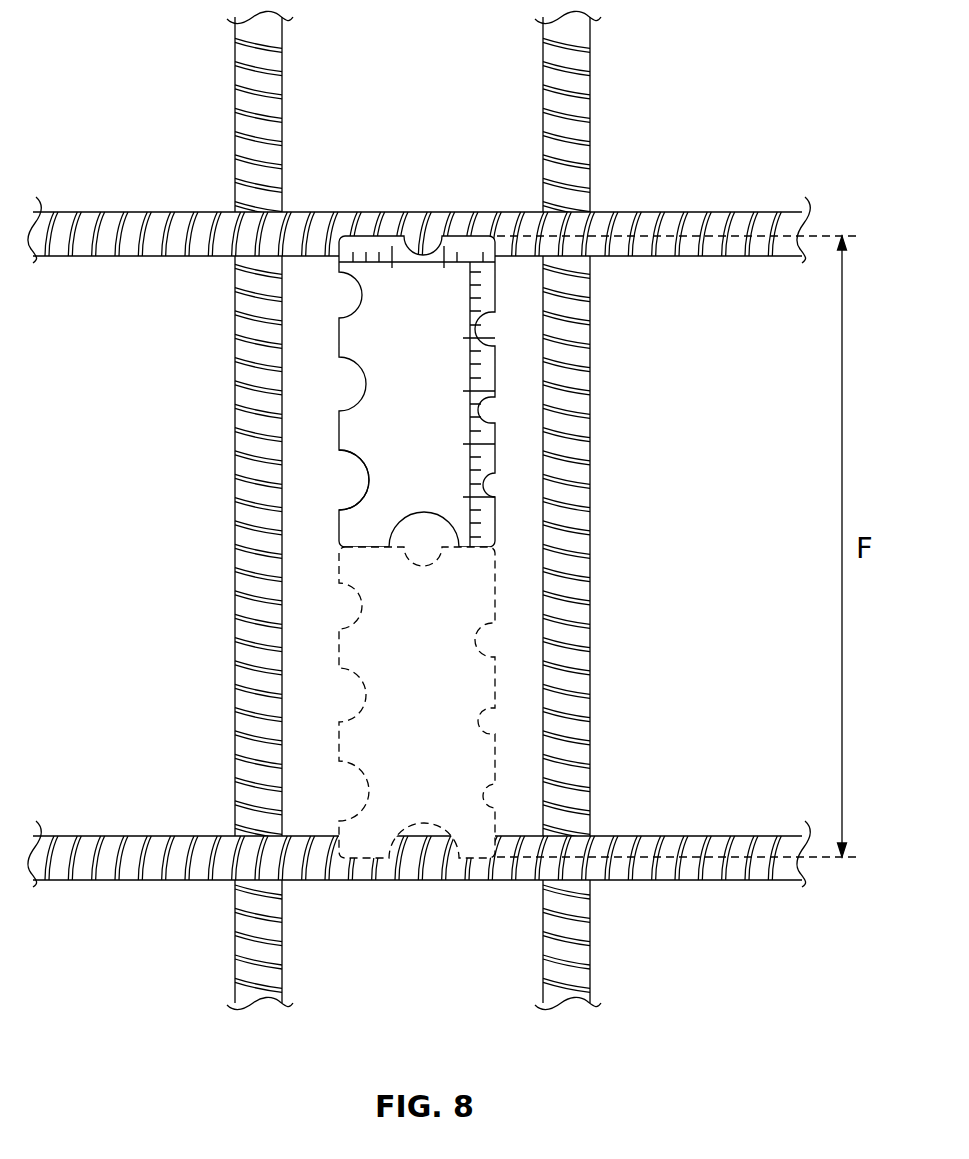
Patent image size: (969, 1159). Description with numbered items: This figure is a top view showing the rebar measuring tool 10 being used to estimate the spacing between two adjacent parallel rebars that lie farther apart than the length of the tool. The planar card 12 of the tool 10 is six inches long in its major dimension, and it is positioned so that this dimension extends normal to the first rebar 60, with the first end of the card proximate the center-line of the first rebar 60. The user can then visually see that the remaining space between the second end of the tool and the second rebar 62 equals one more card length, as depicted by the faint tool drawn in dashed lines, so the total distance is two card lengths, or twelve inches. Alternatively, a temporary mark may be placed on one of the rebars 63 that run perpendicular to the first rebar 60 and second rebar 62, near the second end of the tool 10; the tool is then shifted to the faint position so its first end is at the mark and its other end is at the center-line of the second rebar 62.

The rebar measuring tool 10 is at (360, 295).
The planar card 12 is at (338, 431).
The first rebar 60 is at (115, 212).
The second rebar 62 is at (115, 838).
The perpendicular rebars 63 is at (283, 107).